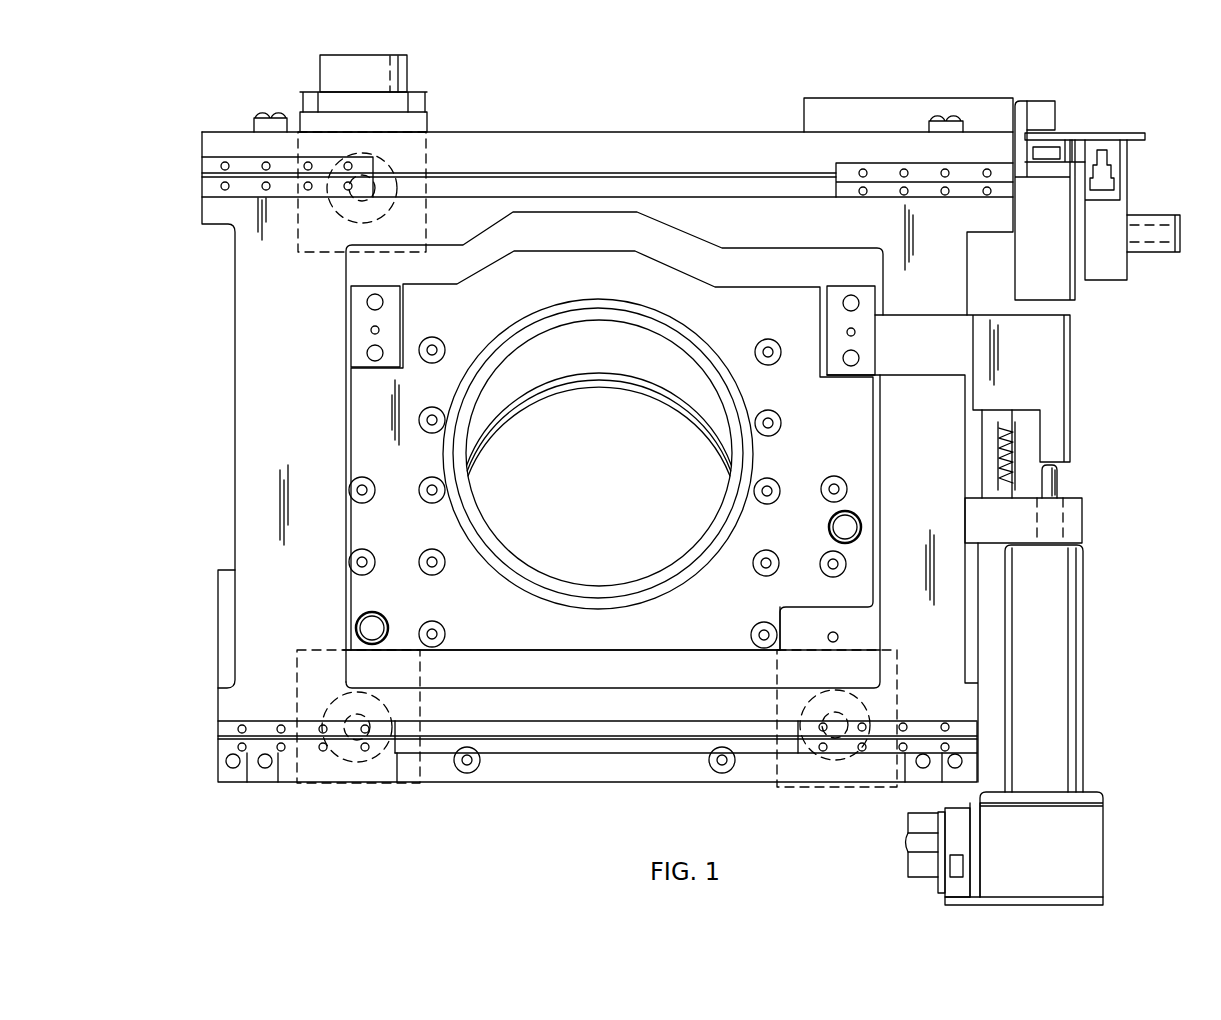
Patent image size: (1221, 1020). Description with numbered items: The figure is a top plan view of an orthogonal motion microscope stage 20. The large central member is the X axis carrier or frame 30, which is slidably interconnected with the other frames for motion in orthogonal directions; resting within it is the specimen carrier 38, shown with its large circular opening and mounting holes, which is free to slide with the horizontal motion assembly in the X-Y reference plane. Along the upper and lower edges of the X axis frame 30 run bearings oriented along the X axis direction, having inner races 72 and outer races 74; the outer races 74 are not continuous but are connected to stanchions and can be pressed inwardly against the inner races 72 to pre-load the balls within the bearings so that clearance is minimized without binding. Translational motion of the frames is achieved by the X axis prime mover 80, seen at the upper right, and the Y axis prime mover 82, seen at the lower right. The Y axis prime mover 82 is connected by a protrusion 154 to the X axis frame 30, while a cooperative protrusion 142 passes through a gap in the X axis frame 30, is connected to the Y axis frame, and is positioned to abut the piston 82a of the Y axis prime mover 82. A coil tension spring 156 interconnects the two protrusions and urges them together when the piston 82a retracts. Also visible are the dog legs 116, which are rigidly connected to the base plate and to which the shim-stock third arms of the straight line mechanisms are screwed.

The orthogonal motion microscope stage 20 is at (150, 525).
The X axis carrier or frame 30 is at (507, 218).
The specimen carrier 38 is at (583, 250).
The inner races 72 is at (204, 190).
The outer races 74 is at (205, 163).
The X axis prime mover 80 is at (1078, 300).
The Y axis prime mover 82 is at (1105, 858).
The piston 82a is at (1058, 491).
The dog leg 116 is at (254, 118).
The cooperative protrusion 142 is at (1075, 377).
The protrusion 154 is at (1083, 531).
The coil tension spring 156 is at (1012, 452).